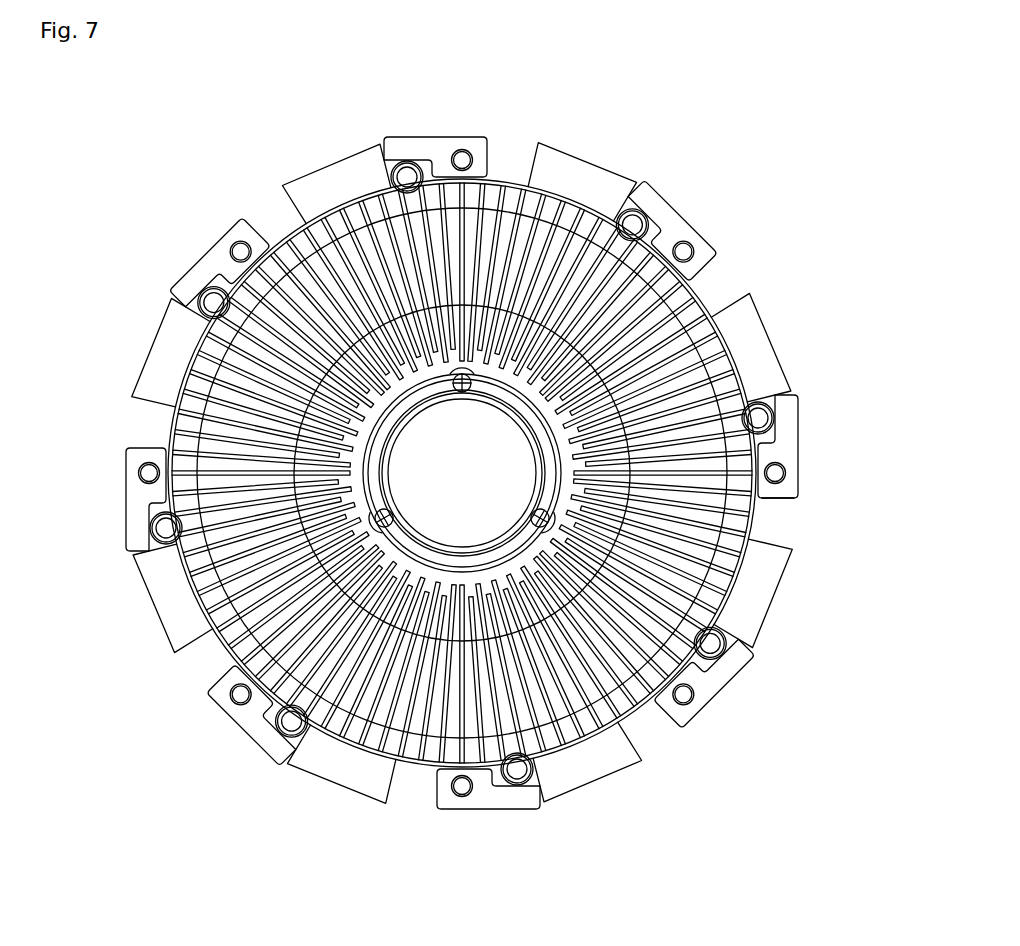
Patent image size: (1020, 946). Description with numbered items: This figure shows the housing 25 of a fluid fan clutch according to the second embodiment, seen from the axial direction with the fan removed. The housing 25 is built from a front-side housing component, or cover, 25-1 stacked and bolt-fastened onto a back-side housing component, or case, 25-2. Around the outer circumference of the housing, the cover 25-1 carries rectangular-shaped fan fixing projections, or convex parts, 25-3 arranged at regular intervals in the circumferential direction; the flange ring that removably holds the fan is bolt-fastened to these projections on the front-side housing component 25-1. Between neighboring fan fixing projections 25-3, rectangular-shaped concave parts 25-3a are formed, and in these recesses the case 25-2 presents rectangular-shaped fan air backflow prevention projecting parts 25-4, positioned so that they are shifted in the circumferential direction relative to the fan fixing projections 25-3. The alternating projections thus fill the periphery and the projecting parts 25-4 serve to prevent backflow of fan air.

The housing 25 is at (594, 142).
The front-side housing component (cover) 25-1 is at (690, 315).
The back-side housing component (case) 25-2 is at (778, 348).
The fan fixing projections (convex parts) 25-3 is at (787, 453).
The concave parts 25-3a is at (752, 525).
The fan air backflow prevention projecting parts 25-4 is at (763, 585).